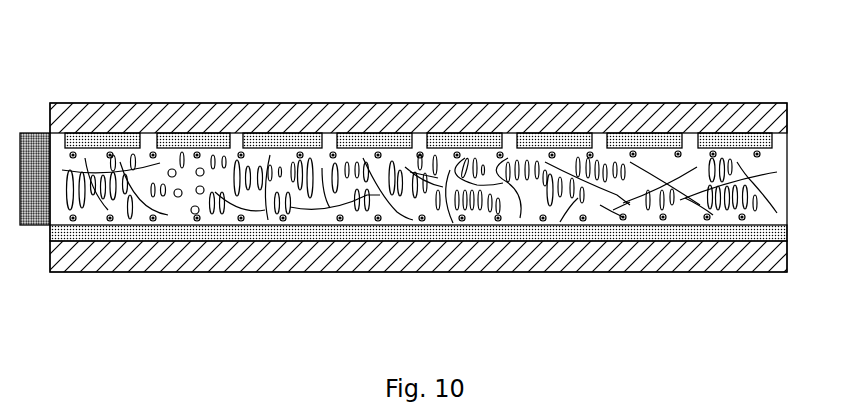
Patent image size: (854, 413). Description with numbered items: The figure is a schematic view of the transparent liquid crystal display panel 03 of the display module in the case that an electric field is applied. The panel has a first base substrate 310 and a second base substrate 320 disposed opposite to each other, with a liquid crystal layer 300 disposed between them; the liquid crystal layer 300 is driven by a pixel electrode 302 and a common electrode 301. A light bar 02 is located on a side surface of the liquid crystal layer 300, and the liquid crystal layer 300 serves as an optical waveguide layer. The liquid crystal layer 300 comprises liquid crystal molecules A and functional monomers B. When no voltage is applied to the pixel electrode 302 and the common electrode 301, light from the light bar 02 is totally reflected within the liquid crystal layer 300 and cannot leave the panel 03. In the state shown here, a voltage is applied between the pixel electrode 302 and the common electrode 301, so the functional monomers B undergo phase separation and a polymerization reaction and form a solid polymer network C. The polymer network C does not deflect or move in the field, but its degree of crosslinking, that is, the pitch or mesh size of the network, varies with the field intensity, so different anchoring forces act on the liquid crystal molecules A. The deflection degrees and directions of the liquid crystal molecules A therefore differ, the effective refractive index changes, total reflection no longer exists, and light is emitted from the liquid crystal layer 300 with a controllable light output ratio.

The light bar 02 is at (34, 148).
The transparent liquid crystal display panel 03 is at (430, 183).
The liquid crystal layer 300 is at (657, 172).
The common electrode 301 is at (265, 232).
The pixel electrode 302 is at (183, 140).
The first base substrate 310 is at (452, 258).
The second base substrate 320 is at (407, 116).
The liquid crystal molecules A is at (577, 198).
The functional monomers B is at (622, 217).
The polymer network C is at (712, 256).